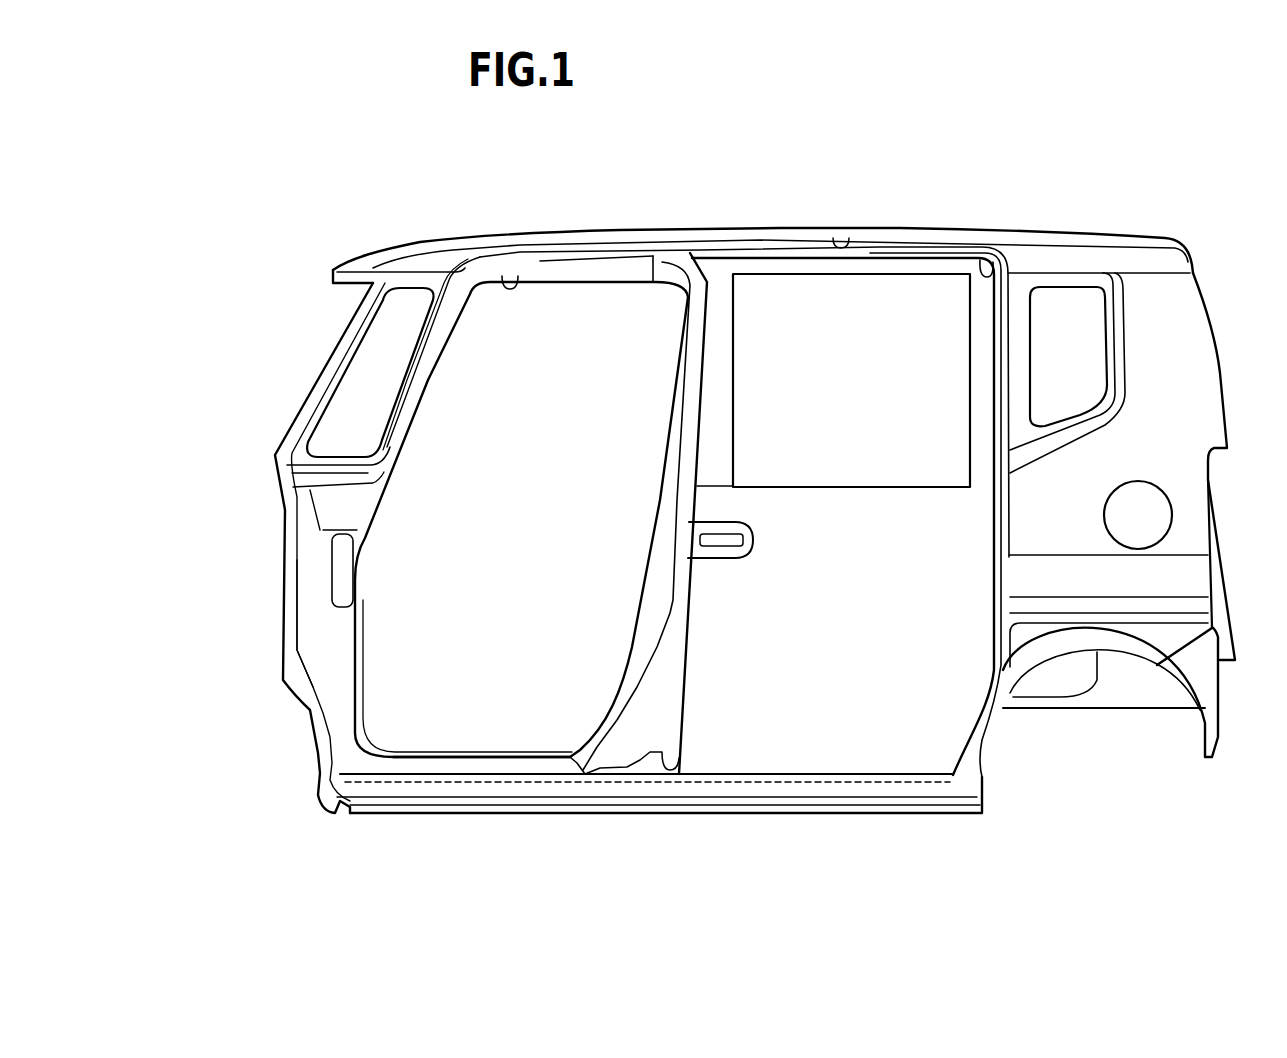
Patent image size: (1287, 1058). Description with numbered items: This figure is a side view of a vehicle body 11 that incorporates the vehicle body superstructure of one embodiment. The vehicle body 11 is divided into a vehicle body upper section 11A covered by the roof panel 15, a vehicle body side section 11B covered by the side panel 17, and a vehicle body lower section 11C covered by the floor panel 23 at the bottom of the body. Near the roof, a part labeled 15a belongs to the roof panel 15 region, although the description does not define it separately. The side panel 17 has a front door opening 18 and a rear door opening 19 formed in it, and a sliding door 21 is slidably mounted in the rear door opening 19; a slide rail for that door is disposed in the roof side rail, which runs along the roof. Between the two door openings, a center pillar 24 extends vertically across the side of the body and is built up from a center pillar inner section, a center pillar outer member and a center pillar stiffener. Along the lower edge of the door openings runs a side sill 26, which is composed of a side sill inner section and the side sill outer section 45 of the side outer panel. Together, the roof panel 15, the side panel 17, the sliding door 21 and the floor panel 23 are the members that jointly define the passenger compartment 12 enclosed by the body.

The vehicle body 11 is at (243, 359).
The vehicle body upper section 11A is at (557, 219).
The vehicle body side section 11B is at (270, 542).
The vehicle body lower section 11C is at (560, 828).
The passenger compartment 12 is at (634, 310).
The roof panel 15 is at (797, 218).
The roof side rail flange 15a is at (842, 238).
The side panel 17 is at (313, 635).
The front door opening 18 is at (507, 273).
The rear door opening 19 is at (982, 262).
The sliding door 21 is at (868, 262).
The floor panel 23 is at (458, 781).
The center pillar 24 is at (660, 520).
The side sill 26 is at (436, 750).
The side sill outer section 45 is at (396, 770).